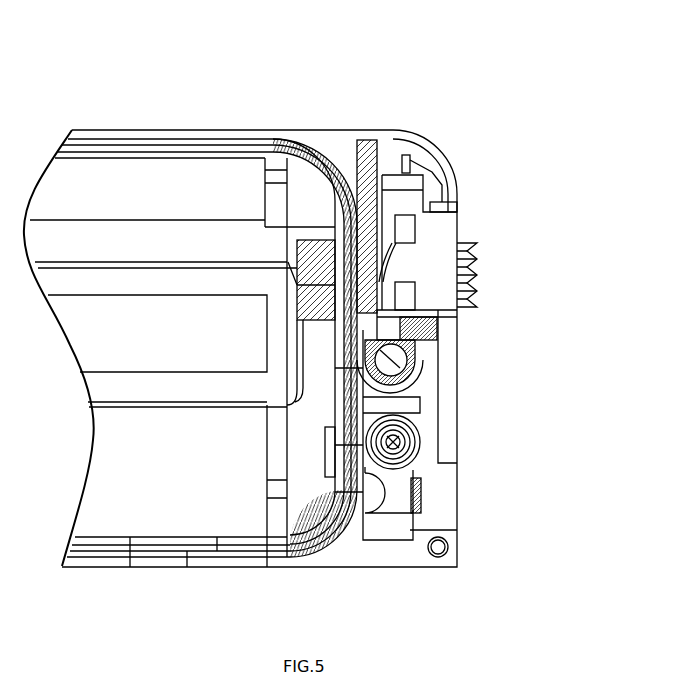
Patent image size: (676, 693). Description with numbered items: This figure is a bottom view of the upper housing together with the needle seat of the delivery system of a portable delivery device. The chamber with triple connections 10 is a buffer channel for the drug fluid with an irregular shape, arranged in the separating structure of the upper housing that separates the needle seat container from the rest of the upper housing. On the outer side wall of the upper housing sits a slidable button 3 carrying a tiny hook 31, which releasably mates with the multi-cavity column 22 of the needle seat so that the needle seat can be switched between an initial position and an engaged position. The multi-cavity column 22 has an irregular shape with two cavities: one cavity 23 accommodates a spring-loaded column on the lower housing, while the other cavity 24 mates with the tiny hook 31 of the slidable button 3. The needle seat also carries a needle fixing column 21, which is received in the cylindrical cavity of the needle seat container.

The chamber with triple connections 10 is at (350, 153).
The slidable button 3 is at (428, 270).
The tiny hook 31 is at (460, 313).
The multi-cavity column 22 is at (440, 327).
The cavity 24 is at (438, 345).
The cavity 23 is at (420, 380).
The needle fixing column 21 is at (412, 456).